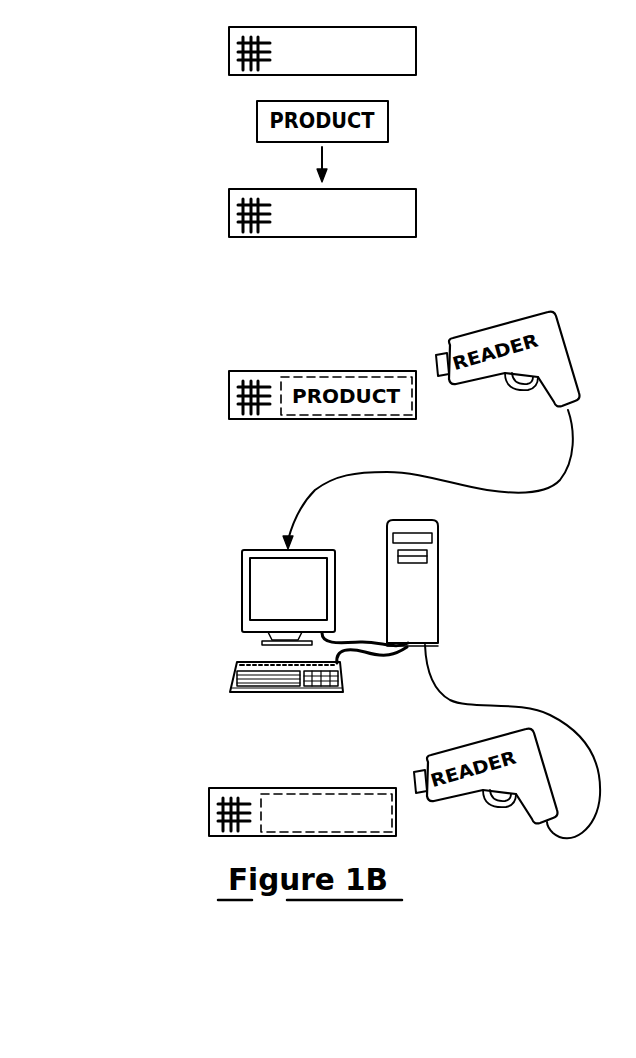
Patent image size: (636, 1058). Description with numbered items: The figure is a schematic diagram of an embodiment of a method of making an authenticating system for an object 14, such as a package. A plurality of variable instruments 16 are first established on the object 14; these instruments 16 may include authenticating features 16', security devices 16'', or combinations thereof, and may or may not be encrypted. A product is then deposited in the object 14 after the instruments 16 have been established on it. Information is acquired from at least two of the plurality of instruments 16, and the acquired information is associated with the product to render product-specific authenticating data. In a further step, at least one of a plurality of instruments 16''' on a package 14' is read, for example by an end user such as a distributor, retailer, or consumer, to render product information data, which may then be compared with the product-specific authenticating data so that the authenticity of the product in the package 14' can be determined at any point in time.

The object 14 is at (378, 51).
The package 14' is at (302, 782).
The variable instruments 16 is at (161, 48).
The authenticating features 16' is at (161, 210).
The security devices 16'' is at (161, 392).
The instruments on package 16''' is at (175, 810).